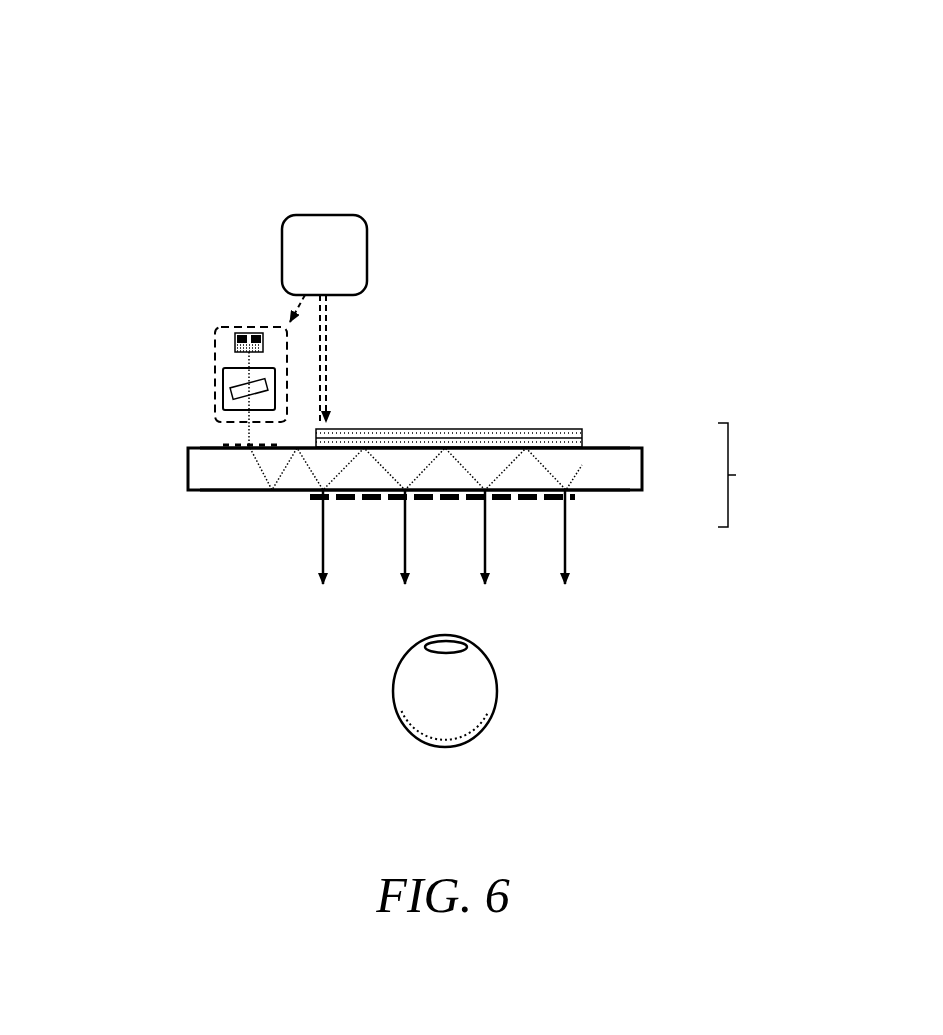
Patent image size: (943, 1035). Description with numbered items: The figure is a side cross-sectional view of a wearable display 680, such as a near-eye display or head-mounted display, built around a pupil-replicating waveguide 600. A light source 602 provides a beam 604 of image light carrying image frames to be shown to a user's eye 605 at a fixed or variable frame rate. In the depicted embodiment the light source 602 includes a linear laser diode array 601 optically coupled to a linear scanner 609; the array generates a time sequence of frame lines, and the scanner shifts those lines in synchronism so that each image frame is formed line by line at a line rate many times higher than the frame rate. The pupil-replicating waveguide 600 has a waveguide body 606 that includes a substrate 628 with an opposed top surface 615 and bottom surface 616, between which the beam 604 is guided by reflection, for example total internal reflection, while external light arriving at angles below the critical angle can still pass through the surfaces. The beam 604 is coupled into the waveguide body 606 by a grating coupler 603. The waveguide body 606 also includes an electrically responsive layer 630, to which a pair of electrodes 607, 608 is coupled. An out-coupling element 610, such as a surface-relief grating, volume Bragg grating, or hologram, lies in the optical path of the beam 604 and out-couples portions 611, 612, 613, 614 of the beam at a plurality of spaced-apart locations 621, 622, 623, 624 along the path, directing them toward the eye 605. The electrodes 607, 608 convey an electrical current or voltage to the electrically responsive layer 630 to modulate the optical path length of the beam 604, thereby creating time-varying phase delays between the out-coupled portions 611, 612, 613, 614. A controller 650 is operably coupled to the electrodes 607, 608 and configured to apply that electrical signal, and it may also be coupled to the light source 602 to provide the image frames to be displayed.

The wearable display 680 is at (450, 141).
The pupil-replicating waveguide 600 is at (643, 332).
The controller 650 is at (303, 267).
The light source 602 is at (208, 340).
The linear laser diode array 601 is at (247, 332).
The linear scanner 609 is at (222, 385).
The beam 604 is at (249, 436).
The substrate 628 is at (188, 472).
The grating coupler 603 is at (232, 452).
The electrode 608 is at (404, 430).
The electrically responsive layer 630 is at (465, 435).
The electrode 607 is at (555, 428).
The top surface 615 is at (616, 442).
The bottom surface 616 is at (626, 495).
The waveguide body 606 is at (750, 475).
The out-coupling element 610 is at (368, 500).
The location 621 is at (320, 504).
The location 622 is at (408, 504).
The location 623 is at (488, 504).
The location 624 is at (567, 500).
The portion of the beam 611 is at (299, 542).
The portion of the beam 612 is at (429, 542).
The portion of the beam 613 is at (508, 543).
The portion of the beam 614 is at (586, 543).
The user's eye 605 is at (497, 688).